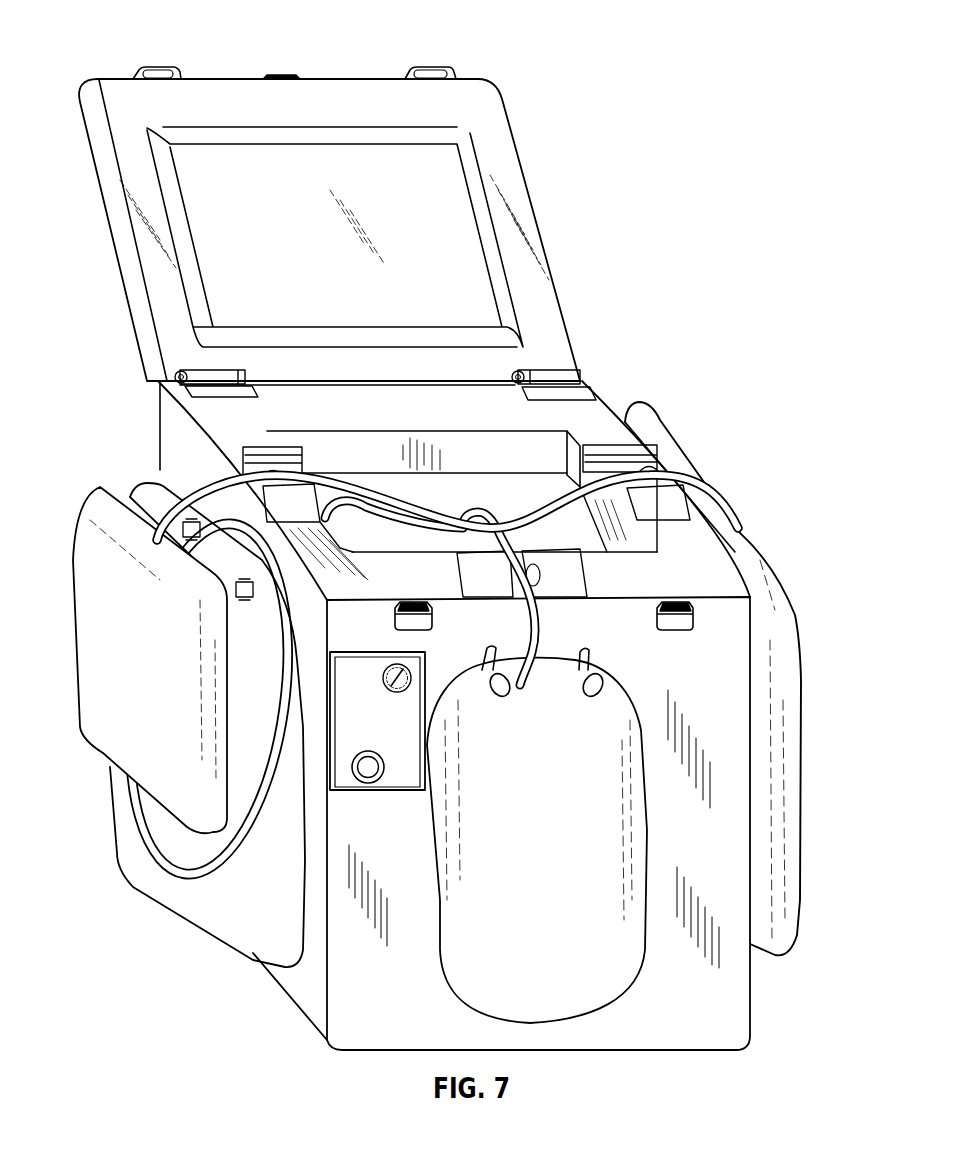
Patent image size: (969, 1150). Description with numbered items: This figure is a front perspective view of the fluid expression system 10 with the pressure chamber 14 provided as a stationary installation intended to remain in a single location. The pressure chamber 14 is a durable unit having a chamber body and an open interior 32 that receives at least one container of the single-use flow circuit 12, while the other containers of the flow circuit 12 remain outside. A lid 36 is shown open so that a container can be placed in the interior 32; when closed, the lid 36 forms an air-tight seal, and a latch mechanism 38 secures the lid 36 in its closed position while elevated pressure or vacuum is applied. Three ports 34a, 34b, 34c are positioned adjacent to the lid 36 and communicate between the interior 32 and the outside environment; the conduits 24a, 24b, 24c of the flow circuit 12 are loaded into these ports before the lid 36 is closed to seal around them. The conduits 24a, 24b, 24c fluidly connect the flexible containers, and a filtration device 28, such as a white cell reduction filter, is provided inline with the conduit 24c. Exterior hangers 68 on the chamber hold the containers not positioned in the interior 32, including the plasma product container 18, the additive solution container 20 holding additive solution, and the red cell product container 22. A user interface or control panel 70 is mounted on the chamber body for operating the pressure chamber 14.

The fluid expression system 10 is at (692, 309).
The flow circuit 12 is at (201, 489).
The pressure chamber 14 is at (318, 76).
The plasma product container 18 is at (793, 800).
The additive solution container 20 is at (566, 878).
The red cell product container 22 is at (207, 922).
The conduit 24a is at (707, 490).
The conduit 24b is at (548, 623).
The conduit 24c is at (243, 850).
The filtration device 28 is at (155, 668).
The open interior 32 is at (537, 447).
The port 34a is at (668, 519).
The port 34b is at (583, 580).
The port 34c is at (297, 448).
The lid 36 is at (513, 177).
The latch mechanism 38 is at (157, 68).
The exterior hangers 68 is at (483, 650).
The control panel 70 is at (392, 783).